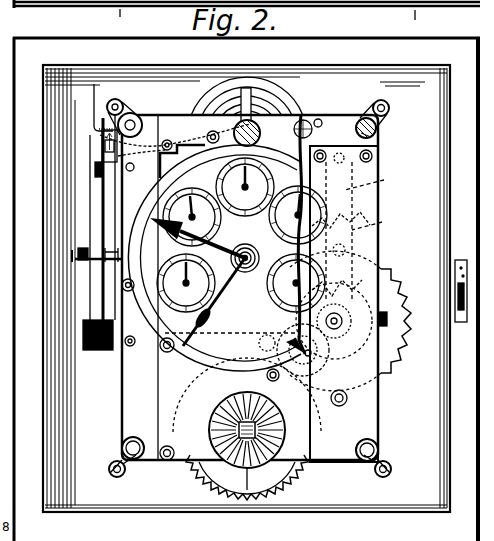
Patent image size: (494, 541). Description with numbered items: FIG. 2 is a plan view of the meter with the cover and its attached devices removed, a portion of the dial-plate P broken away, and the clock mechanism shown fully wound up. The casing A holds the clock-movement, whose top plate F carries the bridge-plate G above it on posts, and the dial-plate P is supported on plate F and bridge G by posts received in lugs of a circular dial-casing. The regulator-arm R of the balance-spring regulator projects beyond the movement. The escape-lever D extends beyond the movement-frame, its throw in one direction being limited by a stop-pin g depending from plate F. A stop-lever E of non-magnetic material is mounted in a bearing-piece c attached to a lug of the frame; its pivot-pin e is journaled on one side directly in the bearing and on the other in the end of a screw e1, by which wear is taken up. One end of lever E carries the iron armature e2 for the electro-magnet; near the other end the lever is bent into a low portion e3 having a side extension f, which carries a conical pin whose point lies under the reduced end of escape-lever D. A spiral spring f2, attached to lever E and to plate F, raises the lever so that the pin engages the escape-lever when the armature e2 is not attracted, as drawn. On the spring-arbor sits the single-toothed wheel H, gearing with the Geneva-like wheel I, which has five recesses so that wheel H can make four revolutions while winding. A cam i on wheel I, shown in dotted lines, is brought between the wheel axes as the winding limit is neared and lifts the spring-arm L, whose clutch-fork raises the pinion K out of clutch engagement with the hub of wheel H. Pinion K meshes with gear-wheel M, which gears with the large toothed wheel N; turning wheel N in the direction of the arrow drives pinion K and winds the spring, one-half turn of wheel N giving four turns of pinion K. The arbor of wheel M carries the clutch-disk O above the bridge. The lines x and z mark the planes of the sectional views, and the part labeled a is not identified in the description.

The section line z z is at (118, 19).
The section line x x is at (413, 21).
The casing A is at (255, 290).
The regulator-arm R is at (254, 108).
The top plate F is at (250, 288).
The lever a is at (175, 142).
The escape-lever D is at (174, 159).
The side extension f is at (104, 134).
The spiral spring f2 is at (115, 118).
The stop-pin g is at (132, 176).
The bearing-piece c is at (118, 247).
The pivot-pin e is at (90, 255).
The screw e1 is at (68, 260).
The armature e2 is at (97, 351).
The low portion e3 is at (101, 152).
The lever E is at (93, 297).
The dial-plate P is at (227, 244).
The bridge-plate G is at (344, 304).
The spring-arm L is at (372, 181).
The wheel I is at (373, 222).
The cam i is at (339, 259).
The pinion K is at (334, 313).
The single-toothed wheel H is at (374, 342).
The gear-wheel M is at (330, 367).
The large toothed wheel N is at (249, 429).
The clutch-disk O is at (225, 440).